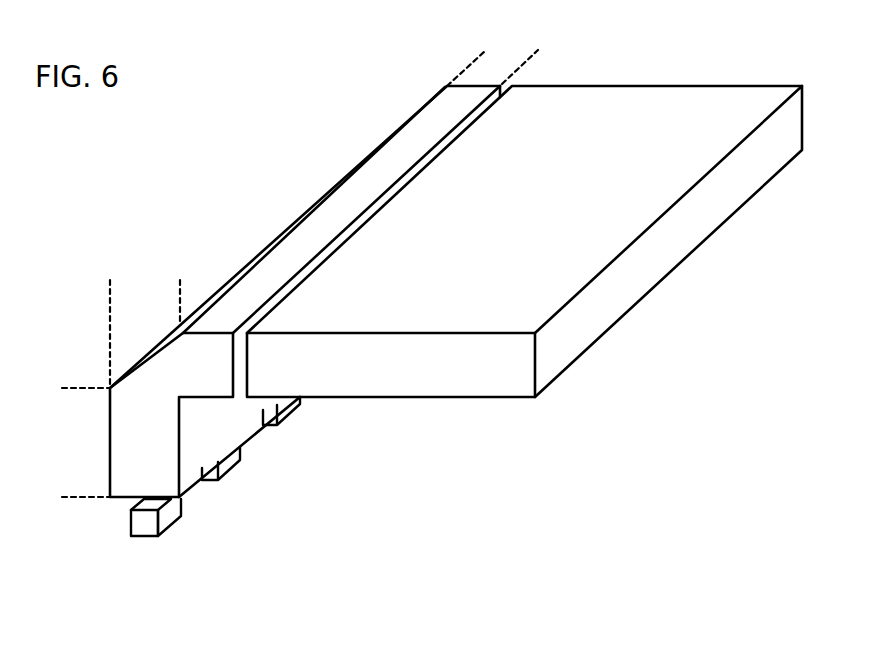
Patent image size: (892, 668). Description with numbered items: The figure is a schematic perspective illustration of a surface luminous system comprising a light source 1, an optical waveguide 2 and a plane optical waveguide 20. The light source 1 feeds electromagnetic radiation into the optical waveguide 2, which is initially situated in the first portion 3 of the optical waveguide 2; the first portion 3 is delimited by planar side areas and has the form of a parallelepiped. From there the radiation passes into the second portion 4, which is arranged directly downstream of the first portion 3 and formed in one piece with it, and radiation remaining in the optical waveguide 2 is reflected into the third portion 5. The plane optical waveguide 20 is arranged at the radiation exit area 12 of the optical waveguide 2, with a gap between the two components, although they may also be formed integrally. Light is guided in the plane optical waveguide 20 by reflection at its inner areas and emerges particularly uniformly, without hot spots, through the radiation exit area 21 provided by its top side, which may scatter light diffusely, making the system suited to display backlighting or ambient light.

The light source 1 is at (168, 515).
The optical waveguide 2 is at (319, 291).
The first portion 3 is at (62, 388).
The second portion 4 is at (180, 289).
The third portion 5 is at (542, 51).
The radiation exit area 12 is at (445, 143).
The plane optical waveguide 20 is at (524, 213).
The radiation exit area 21 is at (512, 232).